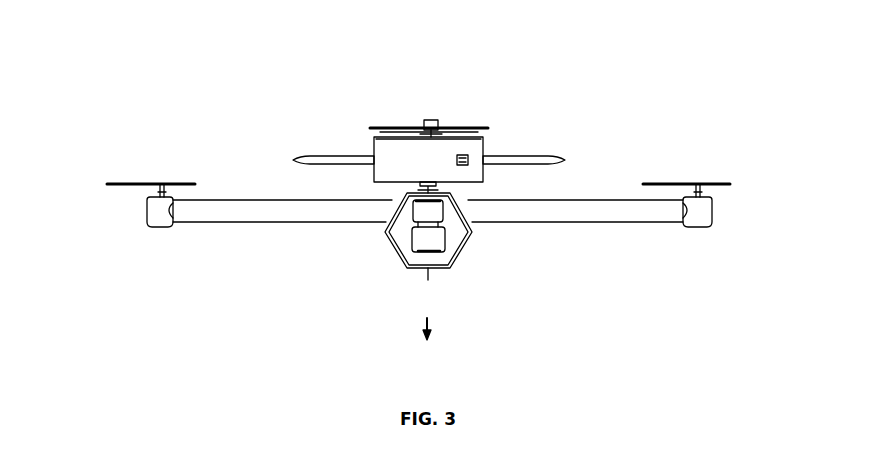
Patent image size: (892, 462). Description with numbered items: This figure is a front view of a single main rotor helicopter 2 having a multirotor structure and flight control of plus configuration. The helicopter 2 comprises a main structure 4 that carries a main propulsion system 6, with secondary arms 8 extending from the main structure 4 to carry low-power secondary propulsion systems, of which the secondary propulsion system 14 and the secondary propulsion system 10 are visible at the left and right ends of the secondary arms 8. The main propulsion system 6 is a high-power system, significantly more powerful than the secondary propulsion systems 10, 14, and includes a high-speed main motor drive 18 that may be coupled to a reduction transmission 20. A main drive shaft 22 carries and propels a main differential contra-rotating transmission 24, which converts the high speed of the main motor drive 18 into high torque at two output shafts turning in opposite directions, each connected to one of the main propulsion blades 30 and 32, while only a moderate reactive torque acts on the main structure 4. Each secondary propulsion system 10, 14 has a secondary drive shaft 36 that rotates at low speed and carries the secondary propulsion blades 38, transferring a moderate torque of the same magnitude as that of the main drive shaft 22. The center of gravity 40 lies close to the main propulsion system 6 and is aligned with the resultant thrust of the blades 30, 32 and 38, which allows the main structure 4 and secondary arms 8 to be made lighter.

The single main rotor helicopter 2 is at (516, 50).
The main structure 4 is at (392, 250).
The main propulsion system 6 is at (504, 273).
The secondary arms 8 is at (258, 210).
The secondary propulsion system 10 is at (700, 210).
The secondary propulsion system 14 is at (157, 210).
The main motor drive 18 is at (430, 240).
The reduction transmission 20 is at (430, 210).
The main drive shaft 22 is at (485, 188).
The main differential contra-rotating transmission 24 is at (404, 150).
The main propulsion blades 30 is at (470, 125).
The main propulsion blades 32 is at (330, 158).
The secondary drive shaft 36 is at (157, 190).
The secondary propulsion blades 38 is at (120, 184).
The center of gravity 40 is at (398, 300).